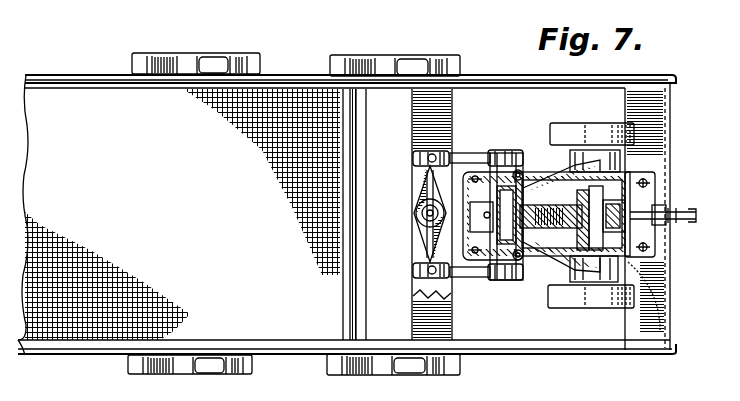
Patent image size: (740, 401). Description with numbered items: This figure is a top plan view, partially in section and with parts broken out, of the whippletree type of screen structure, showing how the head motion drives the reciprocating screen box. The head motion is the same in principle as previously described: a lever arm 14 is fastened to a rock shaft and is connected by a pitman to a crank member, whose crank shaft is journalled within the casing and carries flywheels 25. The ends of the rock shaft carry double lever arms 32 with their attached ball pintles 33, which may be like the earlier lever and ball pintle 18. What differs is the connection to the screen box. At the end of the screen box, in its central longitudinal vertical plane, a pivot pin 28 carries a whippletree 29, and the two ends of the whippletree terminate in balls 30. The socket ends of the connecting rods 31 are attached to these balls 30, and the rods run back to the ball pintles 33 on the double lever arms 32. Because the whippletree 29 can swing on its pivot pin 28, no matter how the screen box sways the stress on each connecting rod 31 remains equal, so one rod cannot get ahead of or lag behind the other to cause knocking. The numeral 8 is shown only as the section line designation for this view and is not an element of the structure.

The lever arm 14 is at (548, 231).
The flywheels 25 is at (580, 131).
The pivot pin 28 is at (418, 213).
The whippletree 29 is at (418, 238).
The balls 30 is at (413, 158).
The connecting rods 31 is at (490, 153).
The double lever arms 32 is at (522, 176).
The ball pintles 33 is at (520, 154).
The ball pintle 18 is at (369, 396).
The frame 8 is at (523, 396).